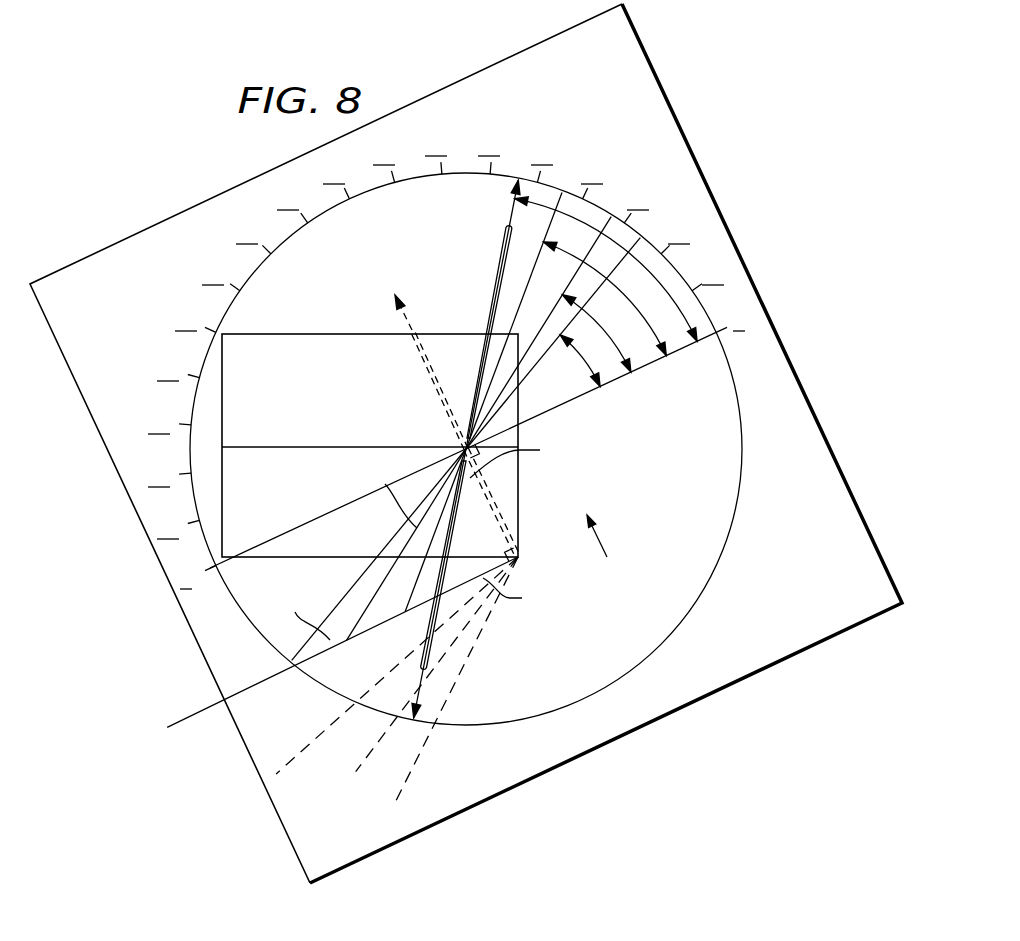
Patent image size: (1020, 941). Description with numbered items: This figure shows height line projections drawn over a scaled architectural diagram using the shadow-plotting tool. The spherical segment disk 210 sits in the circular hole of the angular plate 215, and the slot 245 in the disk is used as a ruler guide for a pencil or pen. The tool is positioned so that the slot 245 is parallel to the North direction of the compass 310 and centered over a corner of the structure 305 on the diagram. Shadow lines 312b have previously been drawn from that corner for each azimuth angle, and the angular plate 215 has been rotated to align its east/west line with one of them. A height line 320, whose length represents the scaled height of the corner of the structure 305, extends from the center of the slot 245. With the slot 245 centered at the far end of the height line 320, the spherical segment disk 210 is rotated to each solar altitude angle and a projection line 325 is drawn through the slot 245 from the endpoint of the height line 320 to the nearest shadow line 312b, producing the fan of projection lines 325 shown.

The spherical segment disk 210 is at (730, 527).
The angular plate 215 is at (466, 443).
The slot 245 is at (497, 290).
The structure 305 is at (338, 334).
The compass 310 is at (595, 535).
The shadow lines 312b is at (453, 642).
The height line 320 is at (497, 503).
The projection lines 325 is at (333, 630).